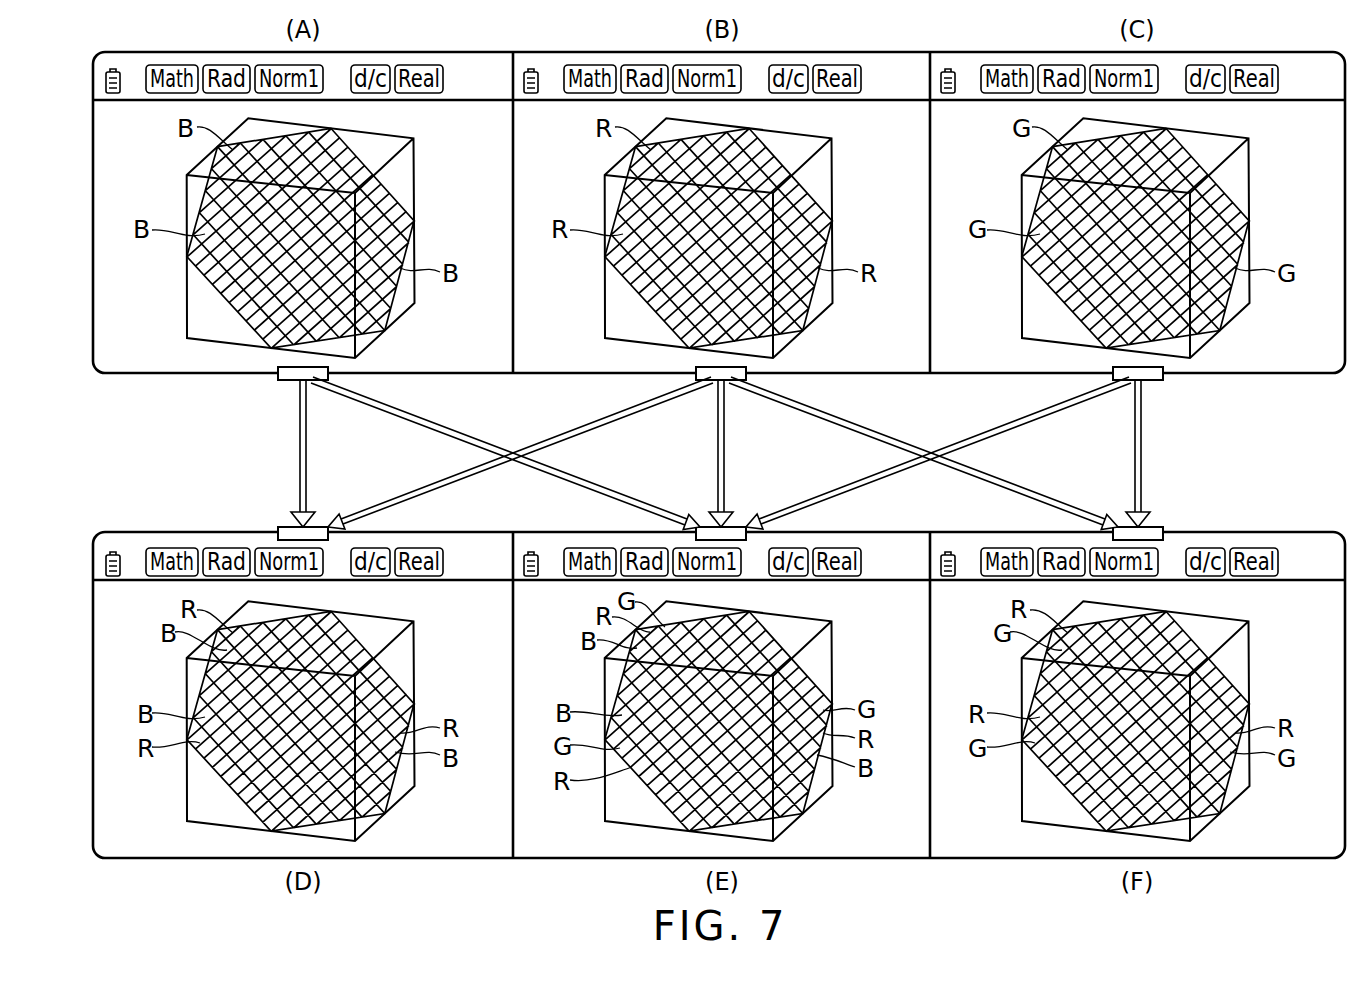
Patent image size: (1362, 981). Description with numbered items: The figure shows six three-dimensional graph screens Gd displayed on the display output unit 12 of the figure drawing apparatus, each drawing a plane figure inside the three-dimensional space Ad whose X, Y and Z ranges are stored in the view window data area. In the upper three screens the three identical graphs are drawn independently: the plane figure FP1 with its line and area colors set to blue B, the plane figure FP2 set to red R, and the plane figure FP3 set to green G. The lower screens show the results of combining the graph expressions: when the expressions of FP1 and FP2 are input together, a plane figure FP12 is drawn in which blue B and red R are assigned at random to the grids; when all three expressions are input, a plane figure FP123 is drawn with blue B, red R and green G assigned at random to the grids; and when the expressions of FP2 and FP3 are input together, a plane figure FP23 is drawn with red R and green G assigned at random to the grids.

The display output unit 12 is at (471, 362).
The 3D space Ad is at (385, 142).
The plane figure FP1 is at (393, 197).
The plane figure FP2 is at (754, 238).
The plane figure FP3 is at (1171, 238).
The plane figure FP12 is at (344, 721).
The plane figure FP123 is at (770, 721).
The plane figure FP23 is at (1179, 721).